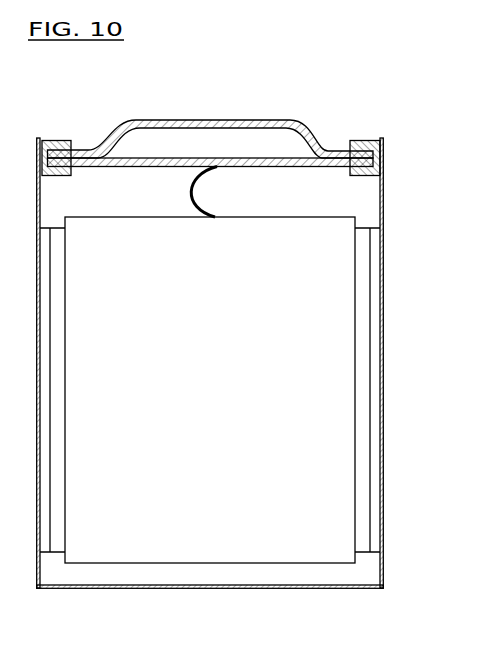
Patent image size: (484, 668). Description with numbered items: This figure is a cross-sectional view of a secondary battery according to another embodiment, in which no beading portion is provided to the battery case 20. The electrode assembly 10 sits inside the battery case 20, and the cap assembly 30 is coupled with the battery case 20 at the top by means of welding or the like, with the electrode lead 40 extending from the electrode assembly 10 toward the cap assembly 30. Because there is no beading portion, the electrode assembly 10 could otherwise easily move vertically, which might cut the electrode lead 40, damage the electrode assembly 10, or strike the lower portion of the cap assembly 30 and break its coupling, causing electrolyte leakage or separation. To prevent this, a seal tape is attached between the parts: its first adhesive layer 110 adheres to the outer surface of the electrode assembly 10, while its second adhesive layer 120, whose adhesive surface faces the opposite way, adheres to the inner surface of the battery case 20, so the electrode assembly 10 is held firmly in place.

The electrode assembly 10 is at (338, 250).
The battery case 20 is at (383, 192).
The cap assembly 30 is at (303, 126).
The electrode lead 40 is at (200, 194).
The first adhesive layer 110 is at (360, 305).
The second adhesive layer 120 is at (375, 268).